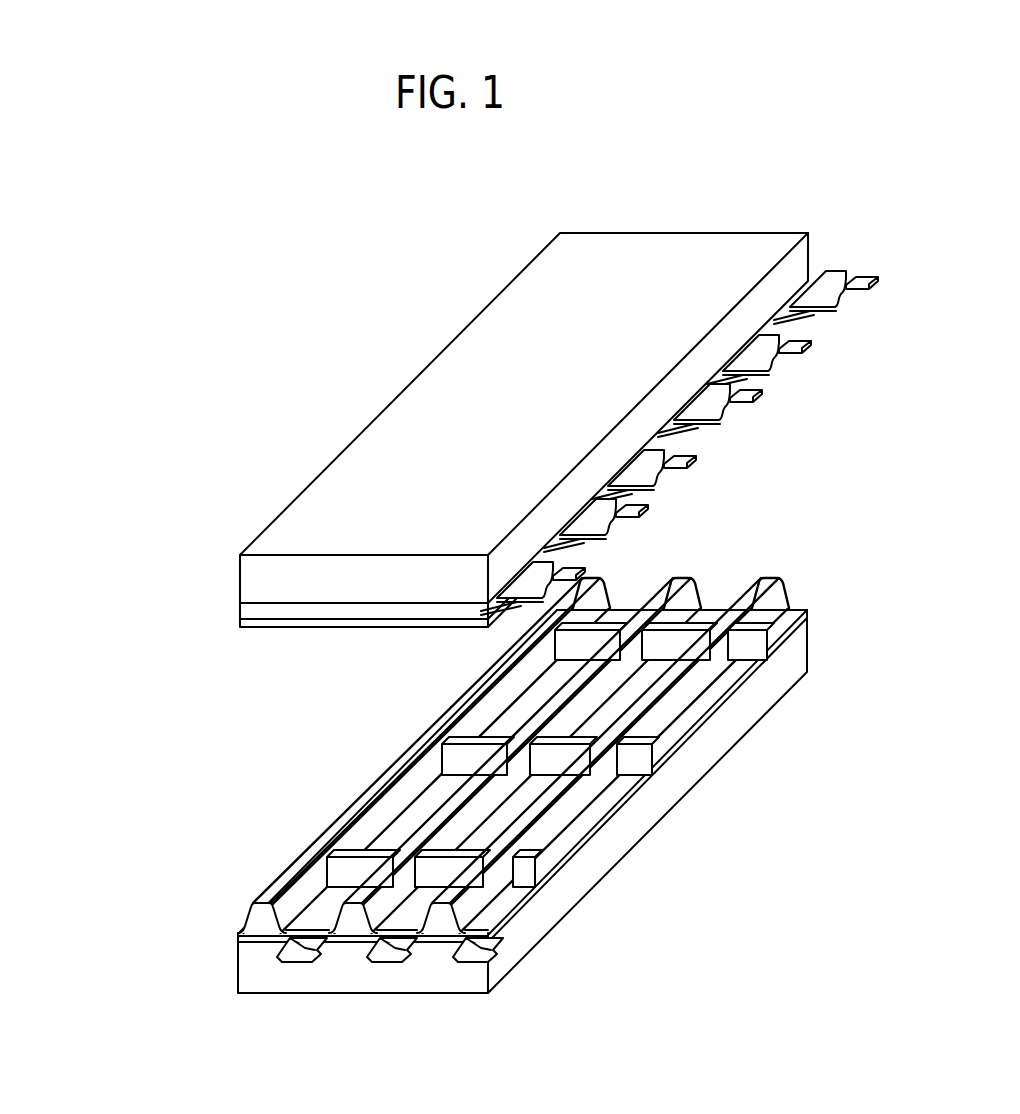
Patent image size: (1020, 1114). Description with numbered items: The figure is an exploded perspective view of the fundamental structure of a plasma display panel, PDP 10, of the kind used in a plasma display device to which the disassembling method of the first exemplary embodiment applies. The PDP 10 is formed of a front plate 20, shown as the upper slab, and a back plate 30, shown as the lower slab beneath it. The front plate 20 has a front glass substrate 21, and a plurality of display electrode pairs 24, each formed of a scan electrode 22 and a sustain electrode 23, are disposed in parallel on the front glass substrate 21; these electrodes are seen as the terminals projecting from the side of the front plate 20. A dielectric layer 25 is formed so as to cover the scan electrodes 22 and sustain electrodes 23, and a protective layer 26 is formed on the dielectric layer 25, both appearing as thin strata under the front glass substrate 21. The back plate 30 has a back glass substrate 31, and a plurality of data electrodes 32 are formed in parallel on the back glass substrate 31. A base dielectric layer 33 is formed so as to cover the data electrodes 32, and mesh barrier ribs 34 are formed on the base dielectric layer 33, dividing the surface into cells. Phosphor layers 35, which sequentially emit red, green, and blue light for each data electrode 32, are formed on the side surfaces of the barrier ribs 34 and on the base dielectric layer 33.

The PDP 10 is at (108, 564).
The front plate 20 is at (168, 570).
The front glass substrate 21 is at (238, 578).
The dielectric layer 25 is at (238, 614).
The protective layer 26 is at (238, 627).
The scan electrodes 22 is at (670, 443).
The sustain electrodes 23 is at (715, 428).
The display electrode pairs 24 is at (688, 443).
The back plate 30 is at (168, 893).
The back glass substrate 31 is at (237, 977).
The data electrodes 32 is at (447, 965).
The base dielectric layer 33 is at (238, 940).
The barrier ribs 34 is at (797, 598).
The phosphor layers 35 is at (240, 930).